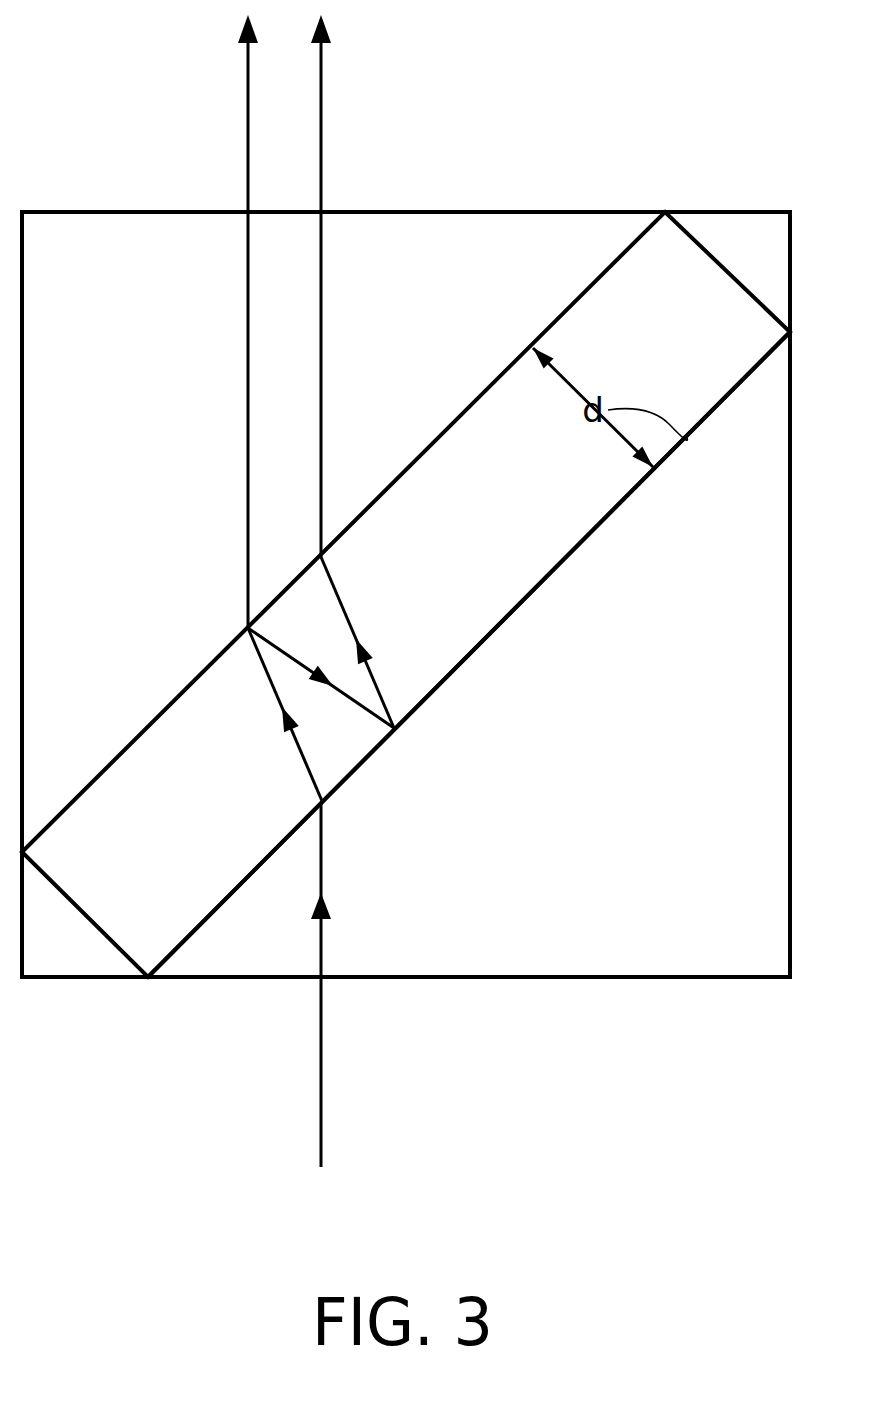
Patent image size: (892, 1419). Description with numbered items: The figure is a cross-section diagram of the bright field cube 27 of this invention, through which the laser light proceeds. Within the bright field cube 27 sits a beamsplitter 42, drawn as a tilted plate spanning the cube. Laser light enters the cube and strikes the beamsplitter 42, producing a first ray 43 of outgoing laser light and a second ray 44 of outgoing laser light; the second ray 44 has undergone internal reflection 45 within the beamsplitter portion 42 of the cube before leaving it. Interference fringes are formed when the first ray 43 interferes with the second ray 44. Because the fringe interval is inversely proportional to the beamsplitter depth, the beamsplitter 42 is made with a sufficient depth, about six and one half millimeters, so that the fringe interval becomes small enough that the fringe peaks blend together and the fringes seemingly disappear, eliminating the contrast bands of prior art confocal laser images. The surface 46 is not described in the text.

The bright field cube 27 is at (450, 212).
The beamsplitter 42 is at (525, 600).
The first ray of outgoing laser light 43 is at (246, 112).
The second ray of outgoing laser light 44 is at (321, 112).
The internal reflection 45 is at (272, 645).
The plate reflecting surface 46 is at (687, 438).